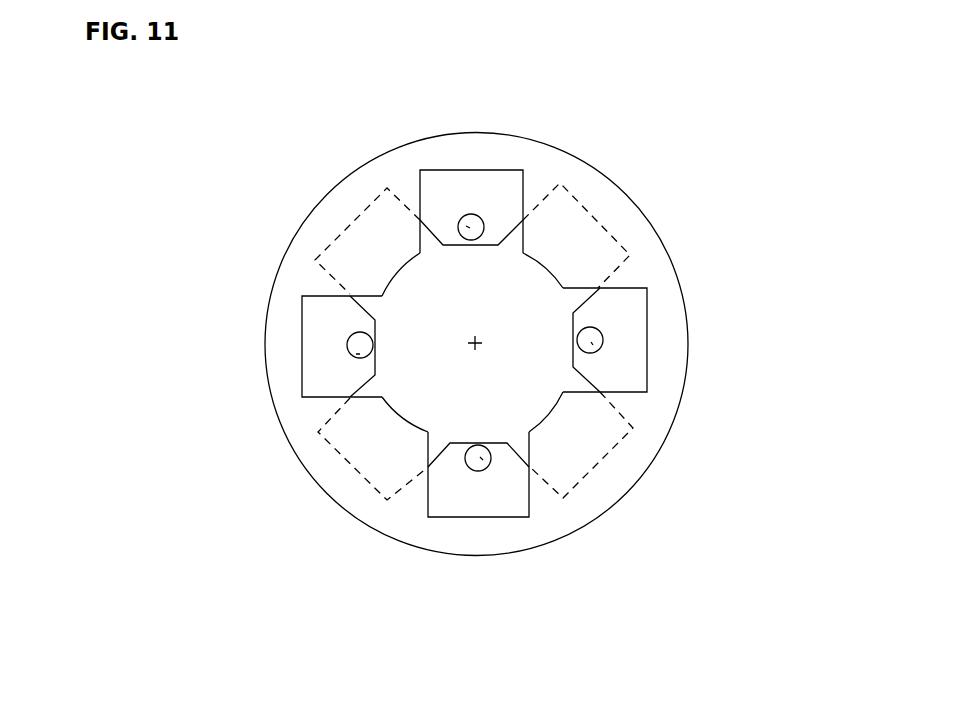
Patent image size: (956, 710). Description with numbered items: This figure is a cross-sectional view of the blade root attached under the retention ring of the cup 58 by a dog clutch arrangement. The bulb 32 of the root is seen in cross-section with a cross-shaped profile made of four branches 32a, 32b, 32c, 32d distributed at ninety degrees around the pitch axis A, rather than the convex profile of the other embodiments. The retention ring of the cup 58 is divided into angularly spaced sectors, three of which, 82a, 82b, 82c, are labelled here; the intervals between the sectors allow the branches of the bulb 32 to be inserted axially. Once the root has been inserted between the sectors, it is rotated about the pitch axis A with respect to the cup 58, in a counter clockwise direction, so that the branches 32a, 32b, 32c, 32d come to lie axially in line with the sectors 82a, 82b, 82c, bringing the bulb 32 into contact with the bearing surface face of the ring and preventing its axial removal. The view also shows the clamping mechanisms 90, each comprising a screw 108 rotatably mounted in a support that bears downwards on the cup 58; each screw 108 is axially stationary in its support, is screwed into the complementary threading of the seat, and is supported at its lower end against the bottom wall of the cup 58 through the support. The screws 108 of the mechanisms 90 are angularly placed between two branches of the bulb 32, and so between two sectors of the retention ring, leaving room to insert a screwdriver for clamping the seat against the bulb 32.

The cup 58 is at (696, 318).
The bulb 32 is at (473, 297).
The branch of the bulb 32a is at (360, 223).
The branch of the bulb 32b is at (607, 223).
The branch of the bulb 32c is at (587, 443).
The branch of the bulb 32d is at (370, 465).
The sector of the retention ring 82a is at (398, 245).
The sector of the retention ring 82b is at (560, 225).
The sector of the retention ring 82c is at (580, 420).
The clamping mechanism 90 is at (472, 225).
The screw 108 is at (468, 225).
The pitch axis A is at (470, 341).